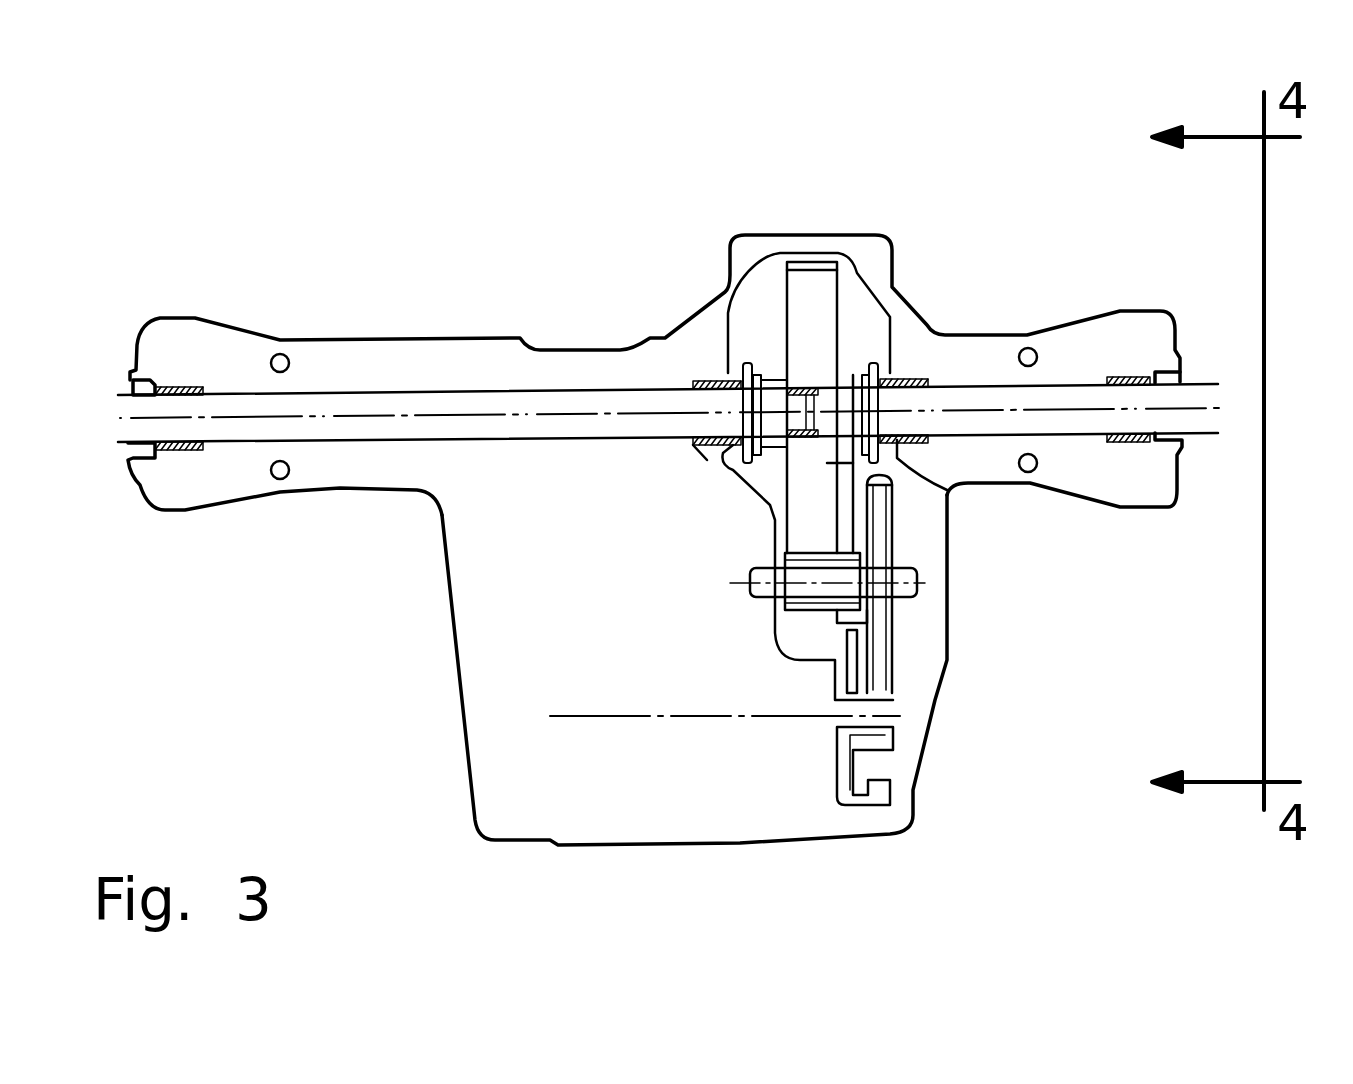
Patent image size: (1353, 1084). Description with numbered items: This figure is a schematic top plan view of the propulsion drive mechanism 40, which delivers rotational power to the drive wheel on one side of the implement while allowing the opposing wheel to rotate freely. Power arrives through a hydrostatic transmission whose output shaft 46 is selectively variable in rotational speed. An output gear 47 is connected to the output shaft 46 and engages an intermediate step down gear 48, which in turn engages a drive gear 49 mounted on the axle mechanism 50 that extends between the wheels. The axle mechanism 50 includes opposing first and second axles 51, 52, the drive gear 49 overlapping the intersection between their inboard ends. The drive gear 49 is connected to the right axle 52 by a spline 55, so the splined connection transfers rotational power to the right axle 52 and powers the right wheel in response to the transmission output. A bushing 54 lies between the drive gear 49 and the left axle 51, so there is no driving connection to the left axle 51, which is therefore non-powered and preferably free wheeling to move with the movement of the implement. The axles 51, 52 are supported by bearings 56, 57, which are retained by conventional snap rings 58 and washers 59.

The propulsion drive mechanism 40 is at (650, 170).
The output shaft 46 is at (653, 718).
The output gear 47 is at (877, 757).
The intermediate step down gear 48 is at (887, 625).
The drive gear 49 is at (793, 300).
The axle mechanism 50 is at (513, 588).
The first axle 51 is at (318, 392).
The second axle 52 is at (1195, 382).
The bushing 54 is at (805, 386).
The spline 55 is at (838, 383).
The bearing 56 is at (725, 452).
The bearing 57 is at (184, 452).
The snap ring 58 is at (760, 505).
The washer 59 is at (745, 467).